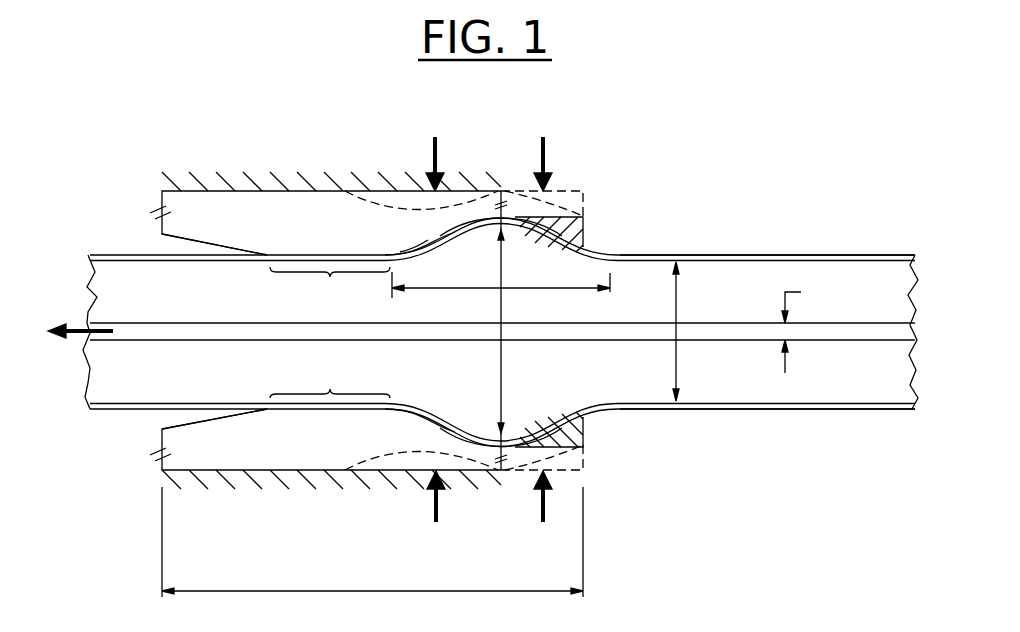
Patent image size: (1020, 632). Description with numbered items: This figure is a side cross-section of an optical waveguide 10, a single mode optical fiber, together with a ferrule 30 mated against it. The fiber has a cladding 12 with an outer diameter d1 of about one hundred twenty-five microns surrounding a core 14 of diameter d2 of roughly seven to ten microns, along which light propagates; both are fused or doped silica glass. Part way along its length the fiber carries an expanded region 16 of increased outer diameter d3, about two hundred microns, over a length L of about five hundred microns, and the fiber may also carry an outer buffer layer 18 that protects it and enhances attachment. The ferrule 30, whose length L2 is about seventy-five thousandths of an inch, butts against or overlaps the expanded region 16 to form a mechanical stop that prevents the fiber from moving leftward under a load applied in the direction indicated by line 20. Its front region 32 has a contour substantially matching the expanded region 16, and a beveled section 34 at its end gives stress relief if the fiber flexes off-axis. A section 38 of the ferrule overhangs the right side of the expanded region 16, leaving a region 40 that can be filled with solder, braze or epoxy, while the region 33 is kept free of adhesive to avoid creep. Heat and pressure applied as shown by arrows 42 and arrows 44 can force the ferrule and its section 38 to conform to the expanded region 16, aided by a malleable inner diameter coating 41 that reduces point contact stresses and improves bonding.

The optical waveguide 10 is at (100, 254).
The cladding 12 is at (97, 302).
The core 14 is at (142, 327).
The expanded region 16 is at (468, 235).
The buffer layer 18 is at (805, 253).
The line 20 is at (80, 340).
The ferrule 30 is at (161, 191).
The front region 32 is at (455, 232).
The region 33 is at (330, 332).
The beveled section 34 is at (223, 243).
The section 38 is at (585, 191).
The region 40 is at (585, 221).
The inner diameter coating 41 is at (425, 267).
The arrows 42 is at (433, 135).
The arrows 44 is at (540, 135).
The outer diameter d1 is at (677, 298).
The diameter d2 is at (808, 325).
The outer diameter d3 is at (503, 386).
The length L is at (513, 281).
The length L2 is at (372, 542).